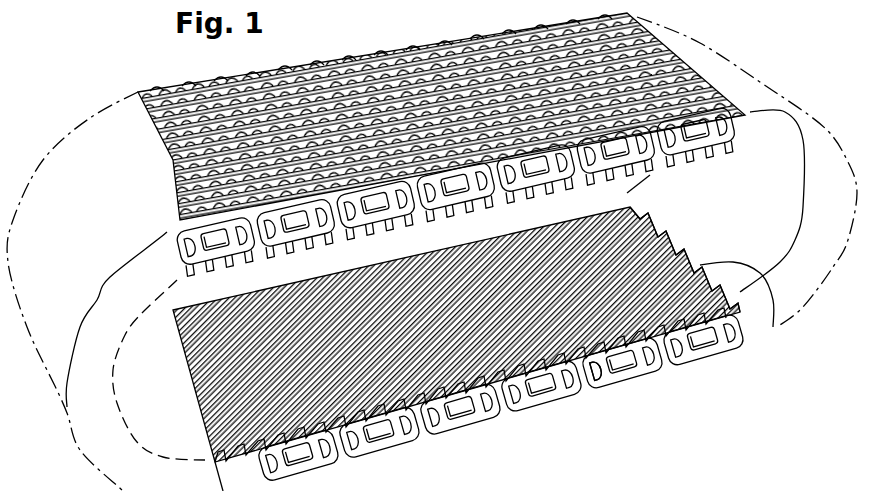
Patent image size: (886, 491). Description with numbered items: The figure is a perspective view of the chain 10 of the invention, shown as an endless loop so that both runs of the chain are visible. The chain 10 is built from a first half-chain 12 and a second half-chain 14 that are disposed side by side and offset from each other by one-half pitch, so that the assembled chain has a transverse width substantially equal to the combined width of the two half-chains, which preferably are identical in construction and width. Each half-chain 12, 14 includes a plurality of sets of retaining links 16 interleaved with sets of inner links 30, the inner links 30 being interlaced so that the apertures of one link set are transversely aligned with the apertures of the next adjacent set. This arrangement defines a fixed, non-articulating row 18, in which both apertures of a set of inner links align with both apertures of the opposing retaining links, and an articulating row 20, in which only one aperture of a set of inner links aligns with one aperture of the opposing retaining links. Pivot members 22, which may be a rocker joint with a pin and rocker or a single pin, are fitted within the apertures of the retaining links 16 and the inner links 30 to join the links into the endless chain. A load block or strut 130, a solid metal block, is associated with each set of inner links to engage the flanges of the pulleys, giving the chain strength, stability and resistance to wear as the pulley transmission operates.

The chain 10 is at (126, 83).
The first half-chain 12 is at (762, 20).
The second half-chain 14 is at (812, 96).
The retaining links 16 is at (563, 388).
The non-articulating row 18 is at (385, 455).
The articulating row 20 is at (431, 445).
The pivot members 22 is at (592, 369).
The inner links 30 is at (703, 344).
The load block or strut 130 is at (750, 322).